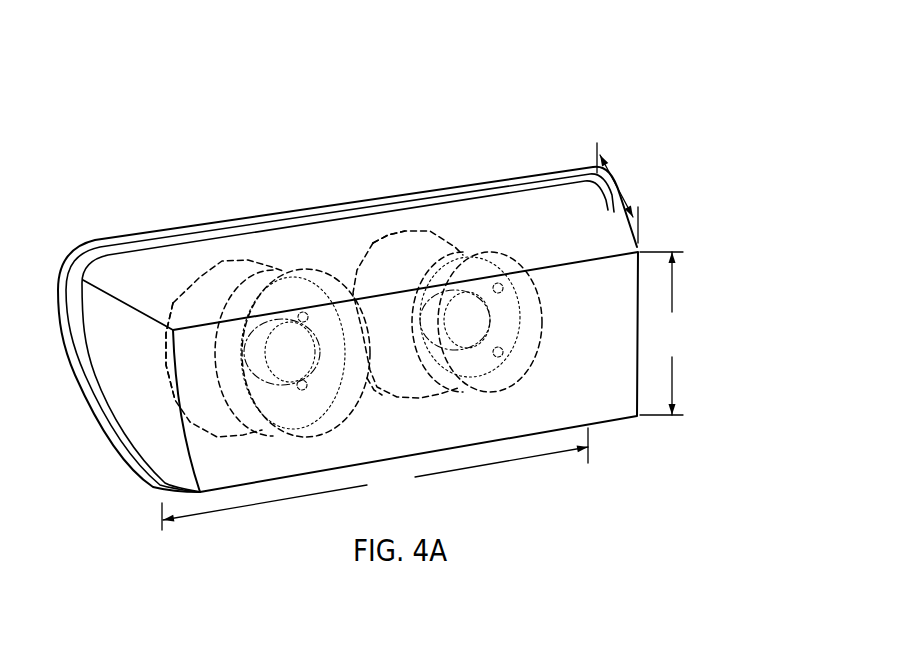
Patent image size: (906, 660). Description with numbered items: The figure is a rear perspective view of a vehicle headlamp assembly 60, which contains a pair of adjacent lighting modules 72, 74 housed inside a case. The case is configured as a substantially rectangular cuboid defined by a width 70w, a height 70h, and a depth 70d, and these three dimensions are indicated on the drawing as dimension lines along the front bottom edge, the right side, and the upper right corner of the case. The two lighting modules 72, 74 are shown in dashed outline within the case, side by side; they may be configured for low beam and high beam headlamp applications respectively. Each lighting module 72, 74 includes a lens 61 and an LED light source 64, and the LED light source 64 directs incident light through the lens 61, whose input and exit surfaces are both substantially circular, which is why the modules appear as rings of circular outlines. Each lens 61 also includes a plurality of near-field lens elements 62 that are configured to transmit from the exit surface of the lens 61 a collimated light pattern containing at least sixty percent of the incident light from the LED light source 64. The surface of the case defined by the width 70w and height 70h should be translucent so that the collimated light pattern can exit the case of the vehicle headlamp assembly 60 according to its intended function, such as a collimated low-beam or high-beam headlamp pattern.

The vehicle headlamp assembly 60 is at (655, 102).
The lens 61 is at (314, 296).
The near-field lens elements 62 is at (230, 278).
The LED light source 64 is at (312, 310).
The lighting module 72 is at (168, 297).
The lighting module 74 is at (371, 241).
The depth 70d is at (620, 185).
The height 70h is at (663, 333).
The width 70w is at (375, 479).